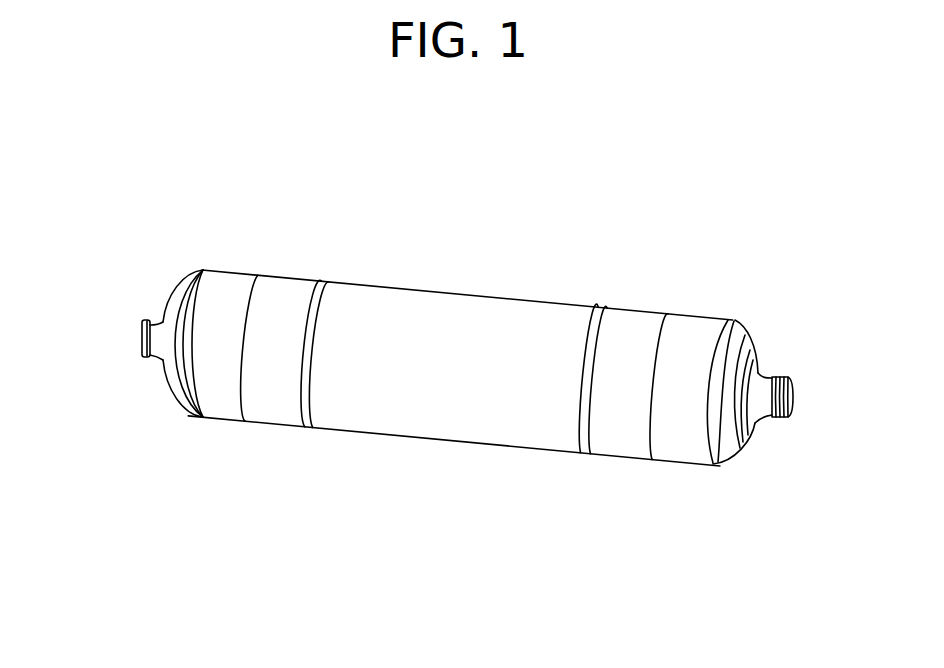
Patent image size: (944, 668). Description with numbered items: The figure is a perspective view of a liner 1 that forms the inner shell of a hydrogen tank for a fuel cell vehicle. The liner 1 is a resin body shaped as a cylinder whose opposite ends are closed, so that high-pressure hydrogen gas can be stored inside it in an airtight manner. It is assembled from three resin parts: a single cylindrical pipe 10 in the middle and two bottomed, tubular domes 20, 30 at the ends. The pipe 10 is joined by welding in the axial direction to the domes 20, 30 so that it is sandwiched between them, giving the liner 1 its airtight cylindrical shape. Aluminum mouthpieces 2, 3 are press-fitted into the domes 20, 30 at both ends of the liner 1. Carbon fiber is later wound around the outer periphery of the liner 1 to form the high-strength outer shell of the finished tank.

The liner 1 is at (449, 374).
The pipe 10 is at (430, 417).
The dome 20 is at (217, 392).
The dome 30 is at (633, 442).
The mouthpiece 2 is at (143, 330).
The mouthpiece 3 is at (792, 392).